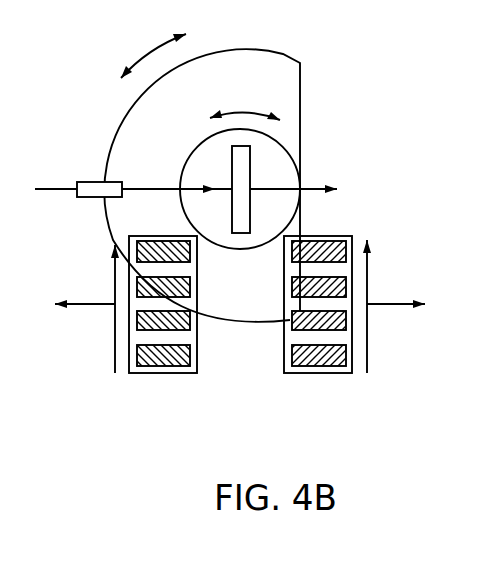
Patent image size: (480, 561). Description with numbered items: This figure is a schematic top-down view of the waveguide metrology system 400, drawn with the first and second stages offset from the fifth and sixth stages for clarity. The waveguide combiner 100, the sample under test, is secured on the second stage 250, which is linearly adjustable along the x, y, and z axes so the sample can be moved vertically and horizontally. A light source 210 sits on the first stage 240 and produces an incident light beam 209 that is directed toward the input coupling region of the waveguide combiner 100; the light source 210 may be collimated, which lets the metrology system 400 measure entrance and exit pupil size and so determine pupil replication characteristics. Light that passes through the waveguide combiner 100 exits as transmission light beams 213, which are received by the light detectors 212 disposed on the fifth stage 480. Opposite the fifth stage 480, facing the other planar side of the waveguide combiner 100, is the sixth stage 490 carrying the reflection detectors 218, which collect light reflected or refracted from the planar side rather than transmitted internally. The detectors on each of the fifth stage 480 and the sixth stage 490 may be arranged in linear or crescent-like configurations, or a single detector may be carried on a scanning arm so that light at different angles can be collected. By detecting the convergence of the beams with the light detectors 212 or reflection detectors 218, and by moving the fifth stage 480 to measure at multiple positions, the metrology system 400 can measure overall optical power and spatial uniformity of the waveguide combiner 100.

The metrology system 400 is at (365, 120).
The first stage 240 is at (190, 123).
The second stage 250 is at (290, 219).
The waveguide combiner 100 is at (250, 160).
The incident light beam 209 is at (157, 189).
The light source 210 is at (90, 182).
The transmission light beams 213 is at (305, 192).
The sixth stage 490 is at (152, 373).
The reflection detectors 218 is at (190, 257).
The fifth stage 480 is at (305, 373).
The light detectors 212 is at (292, 353).